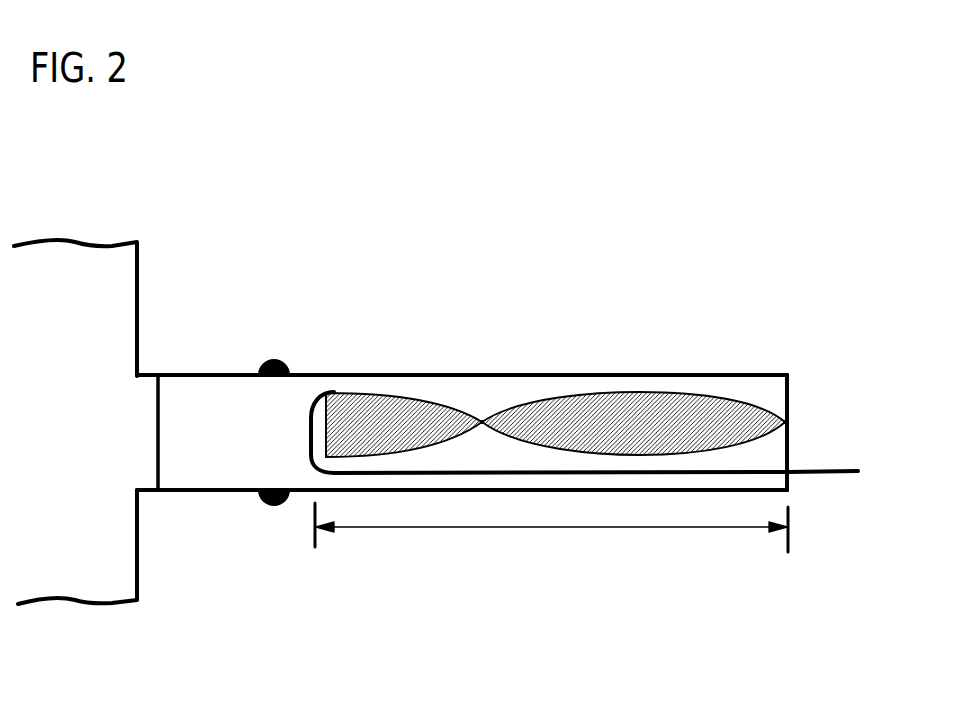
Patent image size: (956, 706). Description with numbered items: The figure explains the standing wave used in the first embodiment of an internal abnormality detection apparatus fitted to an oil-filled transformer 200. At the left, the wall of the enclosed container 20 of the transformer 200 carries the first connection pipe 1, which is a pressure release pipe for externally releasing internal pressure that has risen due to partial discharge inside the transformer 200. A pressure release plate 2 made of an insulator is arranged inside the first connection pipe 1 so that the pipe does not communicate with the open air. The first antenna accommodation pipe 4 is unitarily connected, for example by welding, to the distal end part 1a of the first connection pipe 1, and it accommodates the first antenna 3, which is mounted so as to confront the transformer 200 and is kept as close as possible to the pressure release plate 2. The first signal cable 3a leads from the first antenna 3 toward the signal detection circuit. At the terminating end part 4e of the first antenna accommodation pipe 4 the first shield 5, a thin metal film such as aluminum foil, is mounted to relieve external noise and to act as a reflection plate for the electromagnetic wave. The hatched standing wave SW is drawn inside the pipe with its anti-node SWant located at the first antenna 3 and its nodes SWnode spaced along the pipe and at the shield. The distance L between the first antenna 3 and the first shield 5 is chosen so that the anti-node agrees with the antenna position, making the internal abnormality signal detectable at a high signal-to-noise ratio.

The enclosed container 20 is at (138, 262).
The oil-filled transformer 200 is at (87, 583).
The first connection pipe 1 is at (228, 375).
The distal end part 1a is at (263, 505).
The pressure release plate 2 is at (160, 418).
The first antenna 3 is at (312, 468).
The first signal cable 3a is at (840, 473).
The first antenna accommodation pipe 4 is at (423, 375).
The terminating end part 4e is at (789, 491).
The first shield 5 is at (792, 407).
The standing wave SW is at (458, 406).
The anti-node of the standing wave SWant is at (330, 394).
The node of the standing wave SWnode is at (784, 397).
The distance between antenna and shield L is at (551, 534).